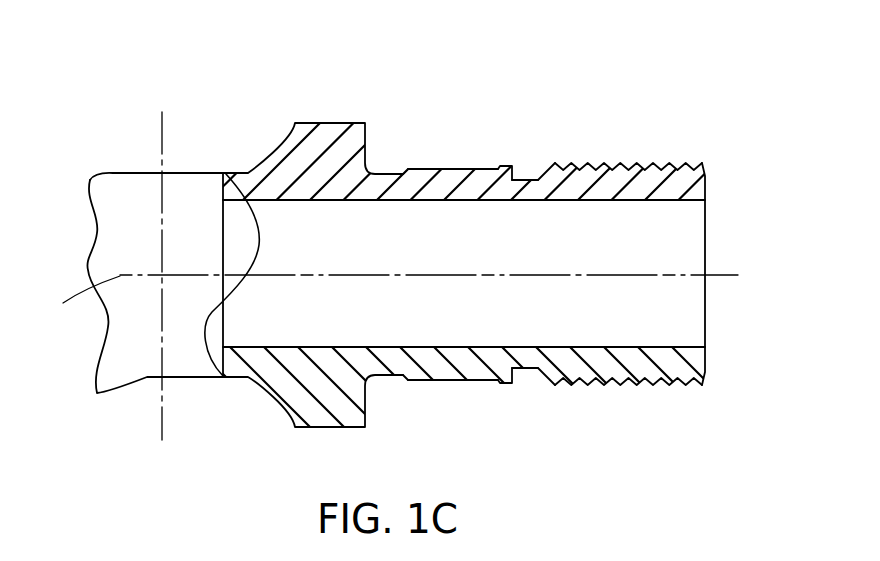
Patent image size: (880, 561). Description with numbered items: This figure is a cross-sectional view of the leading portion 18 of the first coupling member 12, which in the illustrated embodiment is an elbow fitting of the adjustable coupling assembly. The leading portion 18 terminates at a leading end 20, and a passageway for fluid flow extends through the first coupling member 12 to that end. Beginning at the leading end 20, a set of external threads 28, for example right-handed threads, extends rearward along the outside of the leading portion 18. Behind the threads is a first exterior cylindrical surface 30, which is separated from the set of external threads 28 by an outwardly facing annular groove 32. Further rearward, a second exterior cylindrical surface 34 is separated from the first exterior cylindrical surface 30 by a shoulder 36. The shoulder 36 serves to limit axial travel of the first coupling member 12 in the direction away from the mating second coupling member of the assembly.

The first coupling member 12 is at (112, 105).
The leading portion 18 is at (412, 70).
The leading end 20 is at (707, 189).
The set of external threads 28 is at (622, 167).
The first exterior cylindrical surface 30 is at (509, 166).
The outwardly facing annular groove 32 is at (530, 177).
The second exterior cylindrical surface 34 is at (443, 168).
The shoulder 36 is at (500, 166).